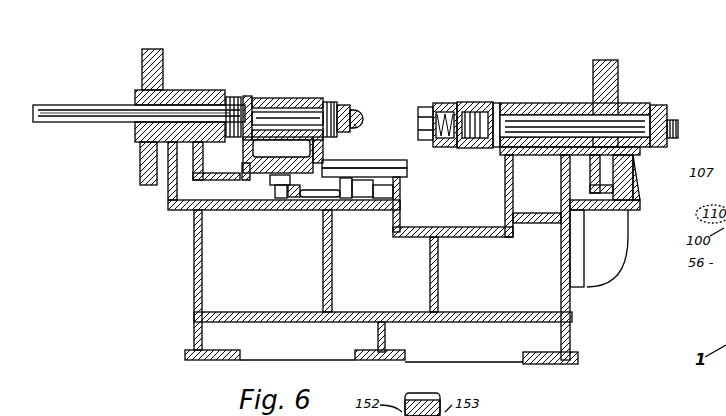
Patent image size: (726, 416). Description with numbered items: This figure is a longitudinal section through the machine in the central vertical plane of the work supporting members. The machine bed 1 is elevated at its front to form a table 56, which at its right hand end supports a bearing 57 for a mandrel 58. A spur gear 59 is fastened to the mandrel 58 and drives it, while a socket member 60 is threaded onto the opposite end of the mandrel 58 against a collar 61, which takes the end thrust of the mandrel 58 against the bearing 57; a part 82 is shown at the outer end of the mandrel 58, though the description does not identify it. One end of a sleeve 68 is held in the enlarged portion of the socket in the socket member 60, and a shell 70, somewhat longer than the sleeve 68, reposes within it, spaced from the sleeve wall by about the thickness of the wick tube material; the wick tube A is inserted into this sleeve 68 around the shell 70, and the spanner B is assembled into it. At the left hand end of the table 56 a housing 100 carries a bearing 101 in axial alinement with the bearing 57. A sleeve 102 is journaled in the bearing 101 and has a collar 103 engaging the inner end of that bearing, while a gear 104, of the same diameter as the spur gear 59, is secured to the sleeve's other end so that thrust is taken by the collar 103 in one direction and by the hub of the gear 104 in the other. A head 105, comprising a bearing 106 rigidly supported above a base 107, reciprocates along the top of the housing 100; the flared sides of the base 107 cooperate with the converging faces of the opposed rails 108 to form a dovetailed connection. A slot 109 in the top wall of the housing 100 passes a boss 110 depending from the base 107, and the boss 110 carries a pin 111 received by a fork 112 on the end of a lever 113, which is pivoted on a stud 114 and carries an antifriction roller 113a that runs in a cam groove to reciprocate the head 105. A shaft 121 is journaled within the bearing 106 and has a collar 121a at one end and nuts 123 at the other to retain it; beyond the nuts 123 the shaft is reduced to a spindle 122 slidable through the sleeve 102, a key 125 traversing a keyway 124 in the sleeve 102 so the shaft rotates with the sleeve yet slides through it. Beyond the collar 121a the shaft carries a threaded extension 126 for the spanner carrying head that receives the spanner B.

The machine bed 1 is at (467, 357).
The table 56 is at (412, 232).
The bearing 57 is at (530, 112).
The mandrel 58 is at (510, 122).
The spur gear 59 is at (610, 90).
The socket member 60 is at (480, 107).
The collar 61 is at (497, 148).
The sleeve 68 is at (443, 107).
The shell 70 is at (450, 140).
The nut 82 is at (676, 123).
The housing 100 is at (403, 188).
The bearing 101 is at (170, 97).
The sleeve 102 is at (224, 96).
The collar 103 is at (236, 100).
The gear 104 is at (143, 152).
The head 105 is at (323, 150).
The bearing 106 is at (289, 102).
The base 107 is at (278, 163).
The rails 108 is at (391, 162).
The slot 109 is at (362, 168).
The boss 110 is at (272, 194).
The pin 111 is at (277, 190).
The fork 112 is at (293, 190).
The lever 113 is at (317, 198).
The antifriction roller 113a is at (380, 198).
The stud 114 is at (340, 196).
The shaft 121 is at (302, 117).
The collar 121a is at (333, 103).
The spindle 122 is at (111, 125).
The nuts 123 is at (236, 141).
The keyway 124 is at (98, 105).
The key 125 is at (165, 104).
The threaded extension 126 is at (358, 112).
The wick tube A is at (459, 122).
The spanner B is at (357, 128).